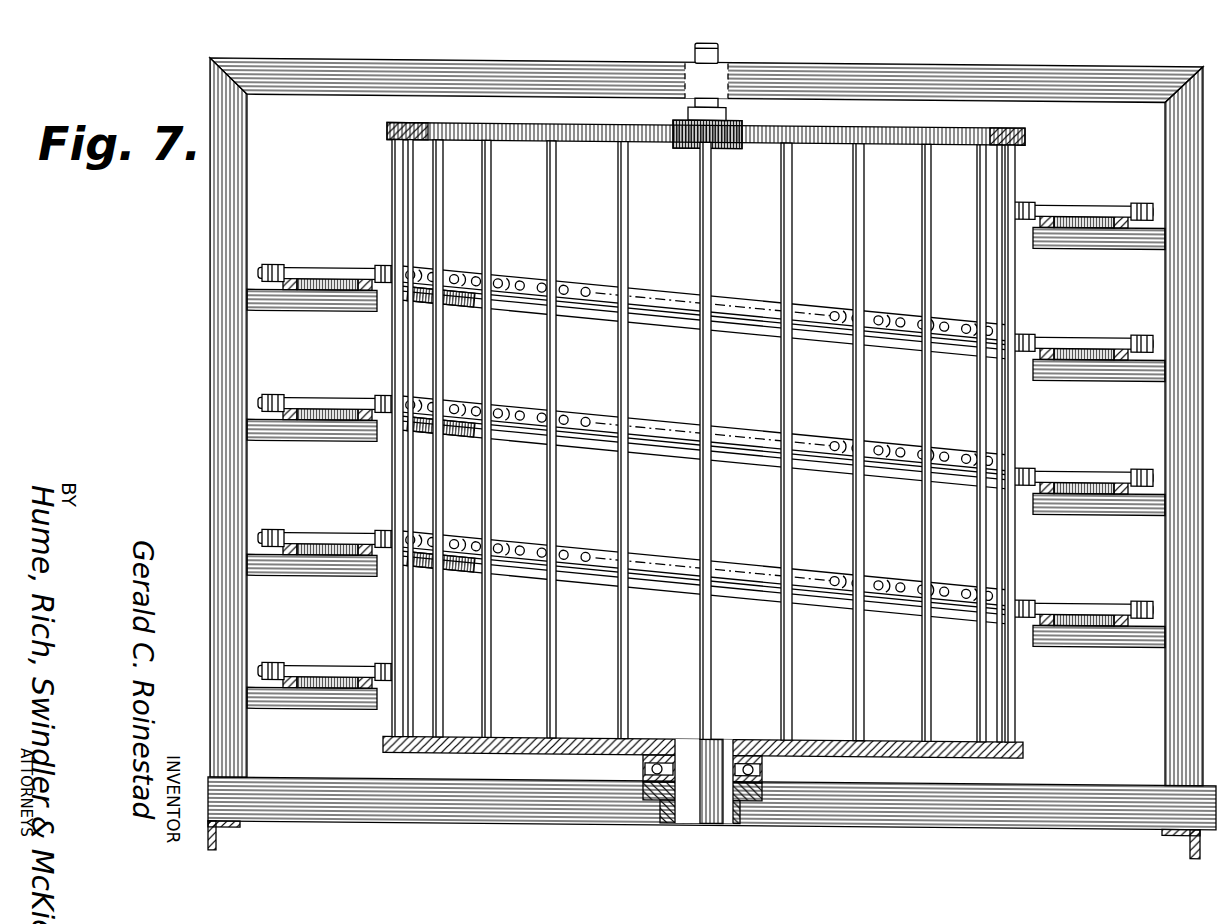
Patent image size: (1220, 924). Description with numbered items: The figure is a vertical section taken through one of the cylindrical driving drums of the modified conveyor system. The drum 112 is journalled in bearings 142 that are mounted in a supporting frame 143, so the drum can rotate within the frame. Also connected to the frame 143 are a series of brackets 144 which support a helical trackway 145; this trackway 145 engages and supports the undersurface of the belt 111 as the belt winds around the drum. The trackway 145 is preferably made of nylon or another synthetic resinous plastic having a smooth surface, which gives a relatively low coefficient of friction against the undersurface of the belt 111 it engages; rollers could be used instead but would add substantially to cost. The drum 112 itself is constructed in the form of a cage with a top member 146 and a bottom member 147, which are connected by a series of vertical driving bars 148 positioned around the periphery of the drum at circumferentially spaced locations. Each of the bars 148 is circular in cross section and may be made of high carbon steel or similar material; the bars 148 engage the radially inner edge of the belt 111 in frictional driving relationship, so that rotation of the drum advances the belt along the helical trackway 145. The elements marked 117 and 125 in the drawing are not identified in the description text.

The belt 111 is at (1088, 587).
The drum 112 is at (384, 128).
The top cross bar 117 is at (560, 120).
The shaft 125 is at (723, 50).
The bearings 142 is at (763, 769).
The supporting frame 143 is at (222, 241).
The brackets 144 is at (1088, 632).
The helical trackway 145 is at (1057, 340).
The top member 146 is at (1026, 124).
The bottom member 147 is at (1025, 739).
The vertical driving bars 148 is at (707, 229).